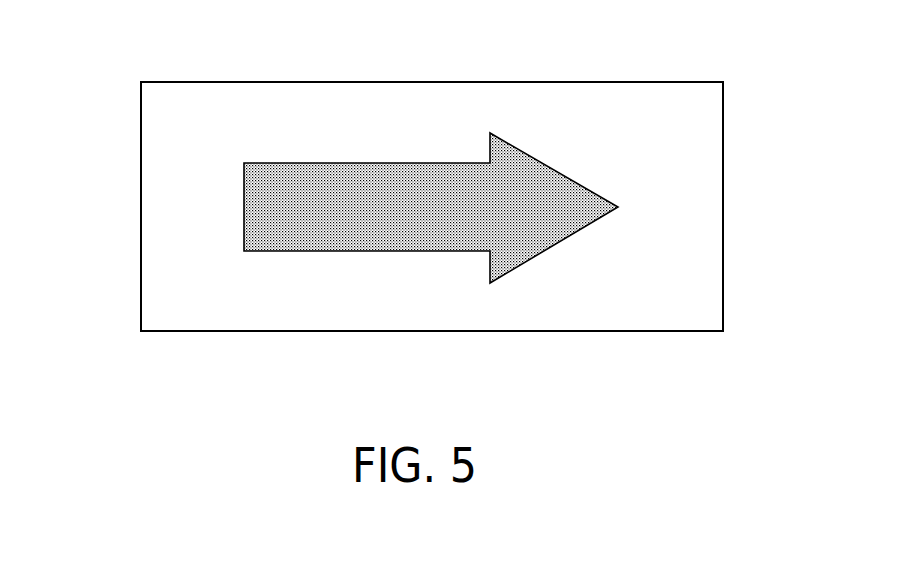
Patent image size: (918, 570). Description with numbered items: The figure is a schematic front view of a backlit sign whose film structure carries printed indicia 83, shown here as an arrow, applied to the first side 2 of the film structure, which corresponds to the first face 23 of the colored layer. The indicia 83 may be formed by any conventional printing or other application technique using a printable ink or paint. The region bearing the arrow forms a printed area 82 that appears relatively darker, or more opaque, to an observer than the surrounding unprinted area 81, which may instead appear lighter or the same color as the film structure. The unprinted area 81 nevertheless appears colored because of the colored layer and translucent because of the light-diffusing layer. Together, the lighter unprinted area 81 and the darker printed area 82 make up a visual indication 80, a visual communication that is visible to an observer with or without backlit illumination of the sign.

The first side 2 is at (193, 100).
The first face 23 is at (251, 308).
The visual indication 80 is at (433, 202).
The unprinted area 81 is at (693, 235).
The printed area 82 is at (539, 208).
The indicia 83 is at (567, 190).